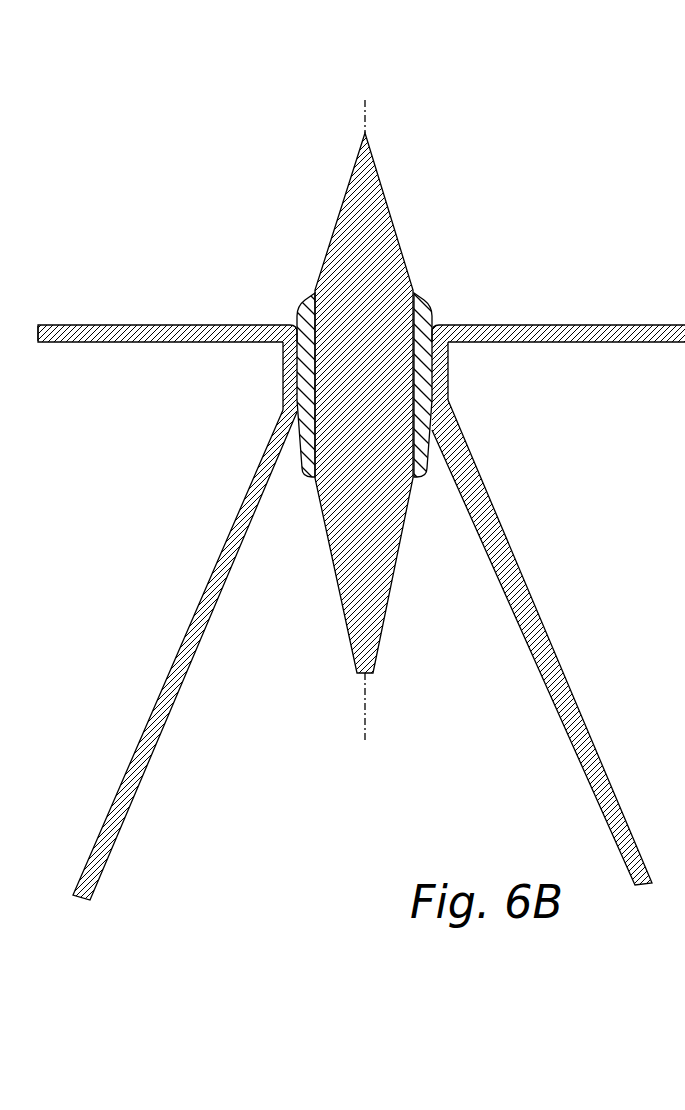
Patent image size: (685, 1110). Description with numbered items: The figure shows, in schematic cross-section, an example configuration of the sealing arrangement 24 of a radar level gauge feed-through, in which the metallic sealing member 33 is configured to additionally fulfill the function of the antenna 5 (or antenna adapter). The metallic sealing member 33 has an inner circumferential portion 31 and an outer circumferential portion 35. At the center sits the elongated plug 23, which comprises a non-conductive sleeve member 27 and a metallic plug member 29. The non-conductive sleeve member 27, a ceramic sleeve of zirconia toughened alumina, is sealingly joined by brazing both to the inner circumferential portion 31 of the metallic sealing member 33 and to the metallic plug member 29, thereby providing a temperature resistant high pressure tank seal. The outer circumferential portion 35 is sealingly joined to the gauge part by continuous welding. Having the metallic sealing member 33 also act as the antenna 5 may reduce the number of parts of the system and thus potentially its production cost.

The antenna 5 is at (567, 671).
The elongated plug 23 is at (400, 432).
The sealing arrangement 24 is at (497, 240).
The non-conductive sleeve member 27 is at (436, 428).
The metallic plug member 29 is at (383, 188).
The inner circumferential portion 31 is at (268, 378).
The metallic sealing member 33 is at (351, 342).
The outer circumferential portion 35 is at (47, 355).